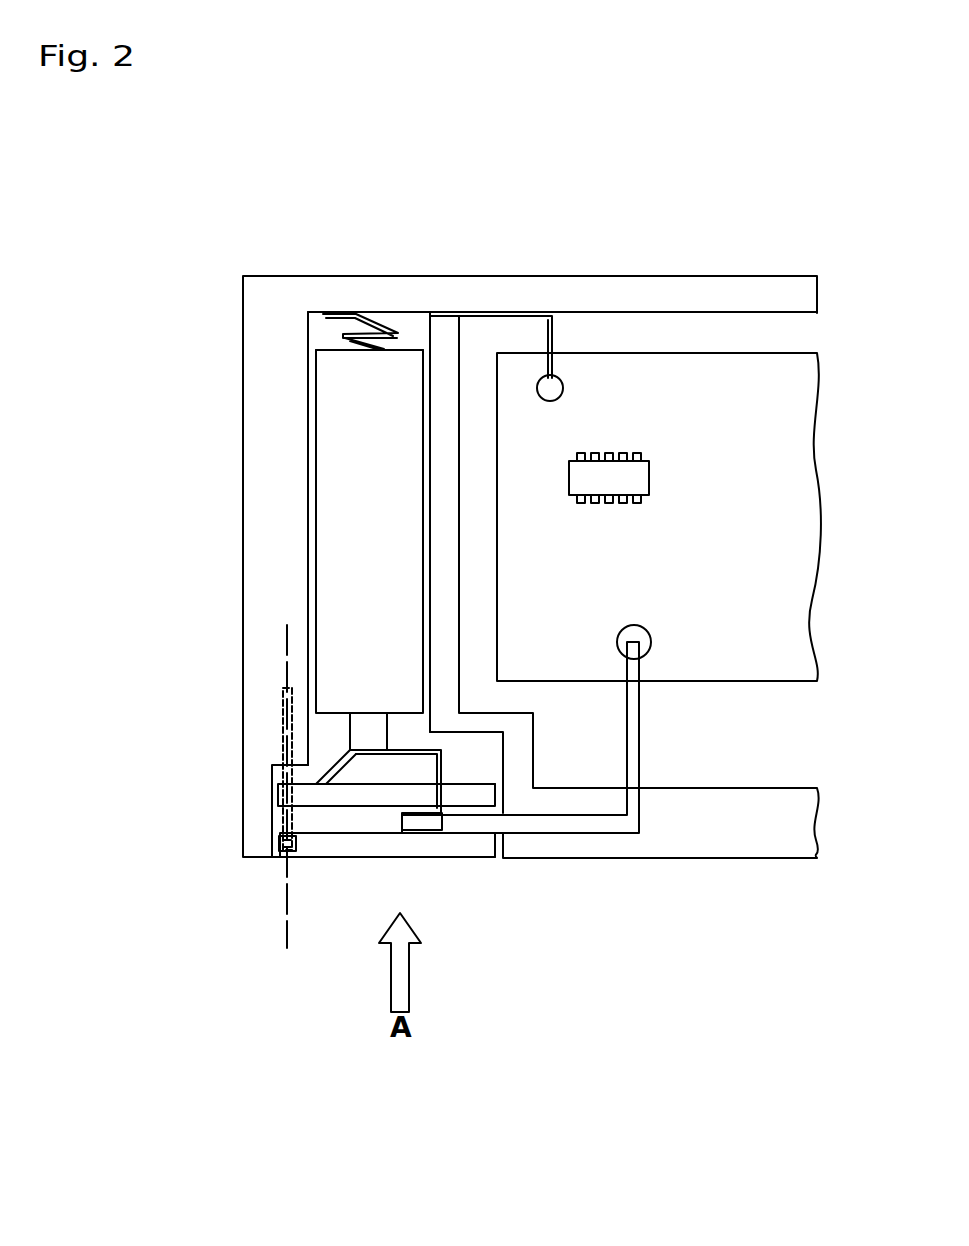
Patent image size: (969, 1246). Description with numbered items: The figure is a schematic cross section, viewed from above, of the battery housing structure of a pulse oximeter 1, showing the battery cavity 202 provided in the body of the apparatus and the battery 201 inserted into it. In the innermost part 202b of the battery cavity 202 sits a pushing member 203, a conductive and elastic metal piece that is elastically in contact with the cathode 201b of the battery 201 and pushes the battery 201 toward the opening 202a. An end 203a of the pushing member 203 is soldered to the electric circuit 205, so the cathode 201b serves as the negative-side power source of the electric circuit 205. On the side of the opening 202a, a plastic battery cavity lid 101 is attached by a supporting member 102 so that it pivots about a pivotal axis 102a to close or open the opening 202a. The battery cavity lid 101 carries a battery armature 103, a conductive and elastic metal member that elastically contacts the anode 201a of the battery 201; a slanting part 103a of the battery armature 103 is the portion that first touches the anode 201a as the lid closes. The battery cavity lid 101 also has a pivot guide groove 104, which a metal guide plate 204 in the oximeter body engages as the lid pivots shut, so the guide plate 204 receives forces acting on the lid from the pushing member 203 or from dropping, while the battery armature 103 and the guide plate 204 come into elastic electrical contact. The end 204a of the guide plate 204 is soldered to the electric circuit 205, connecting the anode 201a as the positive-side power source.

The pulse oximeter 1 is at (795, 848).
The battery cavity lid 101 is at (332, 843).
The supporting member 102 is at (270, 867).
The pivotal axis 102a is at (287, 935).
The battery armature 103 is at (393, 752).
The slanting part 103a is at (312, 762).
The pivot guide groove 104 is at (333, 818).
The battery 201 is at (358, 586).
The anode 201a is at (370, 722).
The cathode 201b is at (337, 352).
The battery cavity 202 is at (312, 528).
The opening 202a is at (326, 732).
The innermost part 202b is at (322, 329).
The pushing member 203 is at (393, 332).
The end of the pushing member 203a is at (550, 360).
The guide plate 204 is at (576, 818).
The end of the guide plate 204a is at (632, 725).
The electric circuit 205 is at (720, 397).